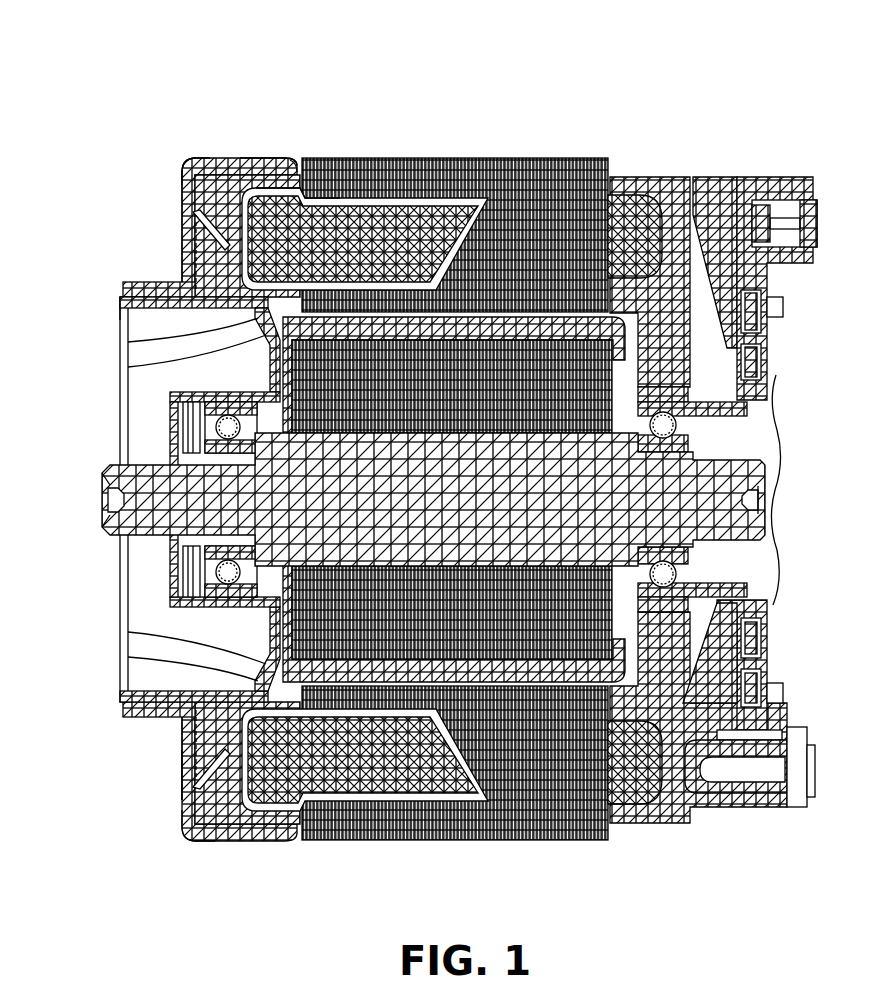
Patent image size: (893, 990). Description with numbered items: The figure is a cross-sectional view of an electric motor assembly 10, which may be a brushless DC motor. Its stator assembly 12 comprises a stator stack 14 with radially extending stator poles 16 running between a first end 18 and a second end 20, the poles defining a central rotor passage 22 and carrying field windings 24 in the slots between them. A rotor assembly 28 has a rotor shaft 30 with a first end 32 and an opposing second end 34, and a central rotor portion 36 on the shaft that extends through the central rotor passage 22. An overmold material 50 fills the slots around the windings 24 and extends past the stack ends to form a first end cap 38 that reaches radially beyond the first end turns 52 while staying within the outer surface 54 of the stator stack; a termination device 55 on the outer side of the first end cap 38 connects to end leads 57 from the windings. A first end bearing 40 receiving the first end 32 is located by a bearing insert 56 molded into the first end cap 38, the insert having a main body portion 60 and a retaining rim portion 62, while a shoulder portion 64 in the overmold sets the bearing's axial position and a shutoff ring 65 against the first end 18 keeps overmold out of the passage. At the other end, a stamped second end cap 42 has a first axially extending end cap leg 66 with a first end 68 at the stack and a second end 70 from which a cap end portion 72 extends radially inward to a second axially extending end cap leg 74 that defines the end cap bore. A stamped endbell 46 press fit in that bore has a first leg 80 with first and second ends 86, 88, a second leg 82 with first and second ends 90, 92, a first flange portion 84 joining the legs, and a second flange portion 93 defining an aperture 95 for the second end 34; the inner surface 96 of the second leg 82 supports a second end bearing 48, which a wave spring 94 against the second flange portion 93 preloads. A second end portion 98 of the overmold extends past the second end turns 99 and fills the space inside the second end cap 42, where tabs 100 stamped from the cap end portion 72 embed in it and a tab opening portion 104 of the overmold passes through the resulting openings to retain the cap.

The electric motor assembly 10 is at (450, 470).
The stator assembly 12 is at (455, 456).
The stator stack 14 is at (455, 464).
The stator poles 16 is at (547, 243).
The first end of the stator stack 18 is at (620, 177).
The second end of the stator stack 20 is at (294, 163).
The central rotor passage 22 is at (213, 742).
The field windings 24 is at (229, 160).
The rotor assembly 28 is at (277, 327).
The rotor shaft 30 is at (419, 481).
The first end of the rotor shaft 32 is at (757, 463).
The second end of the rotor shaft 34 is at (105, 530).
The central rotor portion 36 is at (553, 677).
The first end cap 38 is at (688, 823).
The first end bearing 40 is at (768, 565).
The second end cap 42 is at (180, 838).
The endbell 46 is at (130, 341).
The second end bearing 48 is at (176, 597).
The overmold material 50 is at (318, 718).
The first end turns 52 is at (642, 202).
The outer surface of the stator stack 54 is at (335, 158).
The termination device 55 is at (760, 342).
The bearing insert 56 is at (693, 622).
The end leads 57 is at (780, 300).
The main body portion 60 is at (682, 377).
The rim portion 62 is at (660, 382).
The shoulder portion 64 is at (743, 395).
The shutoff ring 65 is at (707, 613).
The first axially extending end cap leg 66 is at (253, 165).
The first end of the first end cap leg 68 is at (283, 167).
The second end of the first end cap leg 70 is at (183, 165).
The cap end portion 72 is at (186, 188).
The second axially extending end cap leg 74 is at (140, 283).
The first axially extending leg of the endbell 80 is at (118, 327).
The second axially extending leg of the endbell 82 is at (205, 612).
The first flange portion 84 is at (257, 347).
The first end of the first endbell leg 86 is at (133, 360).
The second end of the first endbell leg 88 is at (120, 302).
The first end of the second endbell leg 90 is at (172, 704).
The second end of the second endbell leg 92 is at (212, 600).
The second flange portion 93 is at (183, 405).
The wave spring 94 is at (190, 572).
The aperture 95 is at (185, 597).
The inner surface of the second leg 96 is at (227, 452).
The second end portion of the overmold material 98 is at (180, 777).
The second end turns 99 is at (263, 167).
The tabs 100 is at (205, 162).
The tab opening portion 104 is at (185, 237).